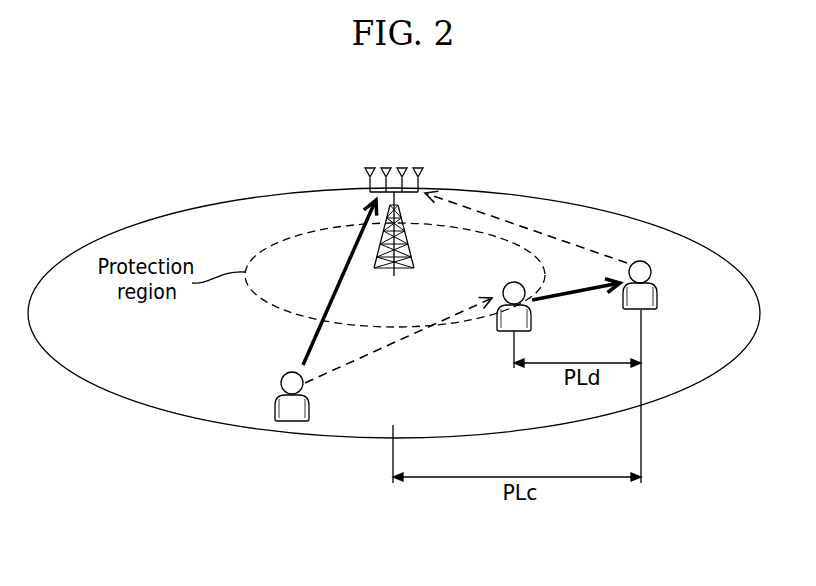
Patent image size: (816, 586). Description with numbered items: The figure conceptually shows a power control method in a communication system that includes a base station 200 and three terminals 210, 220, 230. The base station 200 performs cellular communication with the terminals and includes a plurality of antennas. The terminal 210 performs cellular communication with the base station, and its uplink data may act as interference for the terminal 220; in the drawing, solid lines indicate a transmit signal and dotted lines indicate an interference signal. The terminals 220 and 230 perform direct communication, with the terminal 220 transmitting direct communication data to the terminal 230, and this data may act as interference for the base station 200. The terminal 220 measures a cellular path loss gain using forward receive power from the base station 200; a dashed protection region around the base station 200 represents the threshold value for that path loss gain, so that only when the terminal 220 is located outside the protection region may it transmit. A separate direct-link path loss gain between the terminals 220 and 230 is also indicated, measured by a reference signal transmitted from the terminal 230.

The base station 200 is at (411, 250).
The terminal 210 is at (290, 421).
The terminal 220 is at (497, 328).
The terminal 230 is at (658, 296).